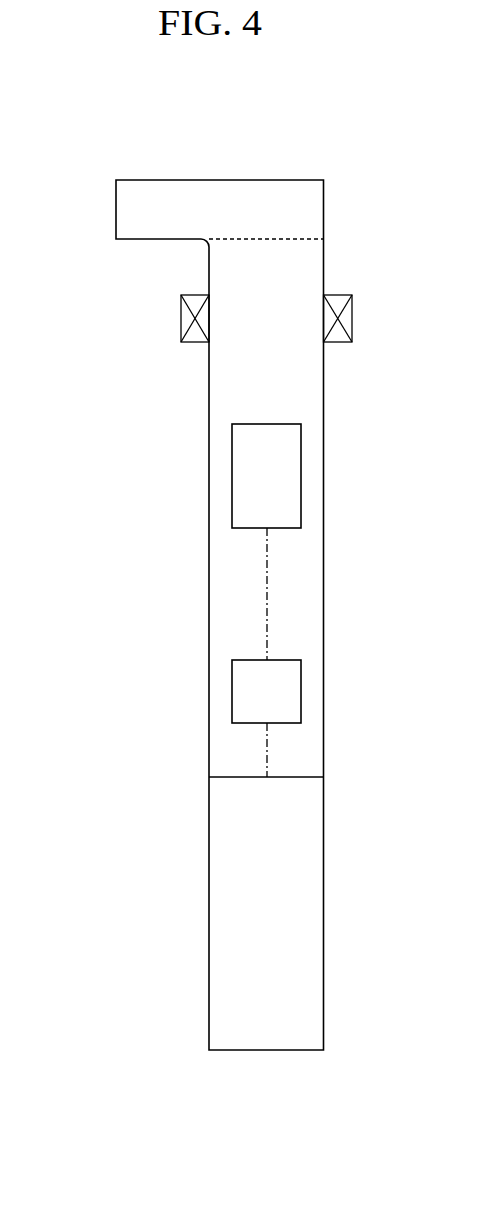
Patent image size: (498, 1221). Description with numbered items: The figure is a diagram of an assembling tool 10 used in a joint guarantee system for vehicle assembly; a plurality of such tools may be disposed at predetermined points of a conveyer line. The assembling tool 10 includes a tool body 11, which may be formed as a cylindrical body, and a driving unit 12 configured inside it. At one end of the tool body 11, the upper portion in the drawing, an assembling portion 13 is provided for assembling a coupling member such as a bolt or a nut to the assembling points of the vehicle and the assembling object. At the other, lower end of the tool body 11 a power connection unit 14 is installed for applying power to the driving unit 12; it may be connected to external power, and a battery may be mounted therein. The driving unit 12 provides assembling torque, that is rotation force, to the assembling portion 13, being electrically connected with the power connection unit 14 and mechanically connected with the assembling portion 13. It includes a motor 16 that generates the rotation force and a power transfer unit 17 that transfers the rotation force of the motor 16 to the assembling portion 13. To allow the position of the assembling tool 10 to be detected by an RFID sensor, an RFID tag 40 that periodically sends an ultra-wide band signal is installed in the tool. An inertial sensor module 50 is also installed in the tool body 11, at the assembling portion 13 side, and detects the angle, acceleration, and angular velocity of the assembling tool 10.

The assembling tool 10 is at (230, 108).
The tool body 11 is at (209, 572).
The driving unit 12 is at (232, 690).
The assembling portion 13 is at (116, 210).
The power connection unit 14 is at (209, 912).
The motor 16 is at (301, 690).
The power transfer unit 17 is at (232, 478).
The RFID tag 40 is at (181, 320).
The inertial sensor module 50 is at (352, 315).